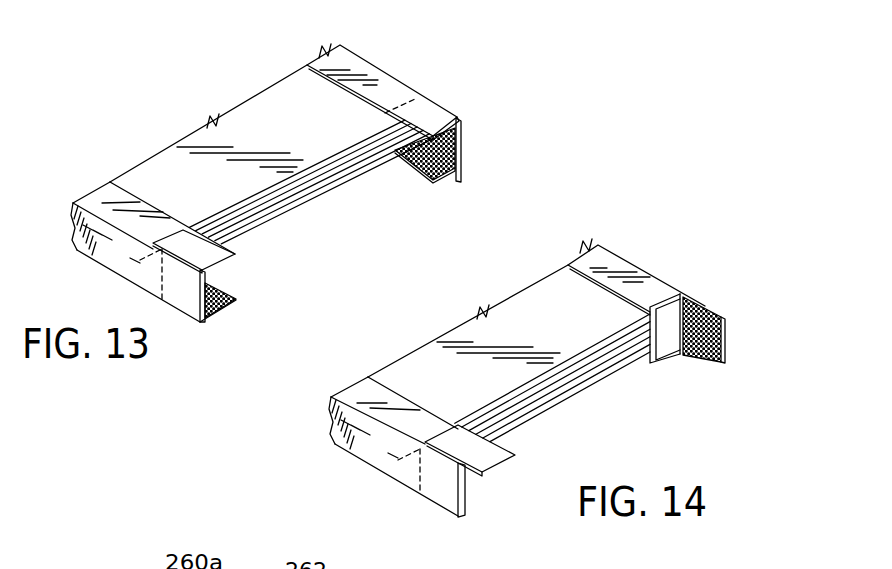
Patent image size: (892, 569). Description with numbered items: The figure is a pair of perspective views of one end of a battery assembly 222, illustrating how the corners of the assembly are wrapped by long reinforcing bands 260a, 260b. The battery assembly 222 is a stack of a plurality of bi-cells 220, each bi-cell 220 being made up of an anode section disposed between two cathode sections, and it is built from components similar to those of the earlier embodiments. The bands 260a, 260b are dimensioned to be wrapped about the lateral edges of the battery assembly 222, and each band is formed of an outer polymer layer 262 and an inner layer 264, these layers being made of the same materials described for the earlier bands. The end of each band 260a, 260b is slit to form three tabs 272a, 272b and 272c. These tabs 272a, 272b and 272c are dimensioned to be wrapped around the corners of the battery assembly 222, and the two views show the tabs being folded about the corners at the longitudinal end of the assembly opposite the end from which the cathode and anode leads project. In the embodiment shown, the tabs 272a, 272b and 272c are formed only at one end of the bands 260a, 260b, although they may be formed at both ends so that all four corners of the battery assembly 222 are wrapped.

In FIG. 13, the bi-cell 220 is at (304, 177).
In FIG. 14, the bi-cell 220 is at (562, 371).
In FIG. 13, the battery assembly 222 is at (253, 99).
In FIG. 14, the battery assembly 222 is at (513, 303).
In FIG. 13, the band 260a is at (90, 206).
In FIG. 14, the band 260a is at (367, 426).
In FIG. 13, the band 260b is at (354, 58).
In FIG. 14, the band 260b is at (613, 251).
In FIG. 13, the outer polymer layer 262 is at (462, 147).
In FIG. 13, the inner layer 264 is at (458, 177).
In FIG. 14, the inner layer 264 is at (723, 358).
In FIG. 13, the tab 272a is at (205, 252).
In FIG. 13, the tab 272b is at (203, 353).
In FIG. 14, the tab 272b is at (484, 461).
In FIG. 13, the tab 272c is at (190, 294).
In FIG. 14, the tab 272c is at (446, 484).